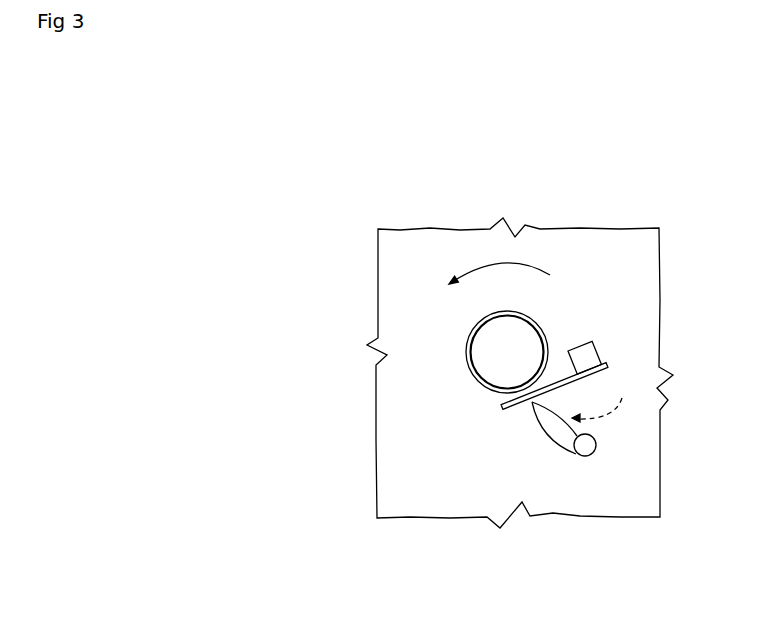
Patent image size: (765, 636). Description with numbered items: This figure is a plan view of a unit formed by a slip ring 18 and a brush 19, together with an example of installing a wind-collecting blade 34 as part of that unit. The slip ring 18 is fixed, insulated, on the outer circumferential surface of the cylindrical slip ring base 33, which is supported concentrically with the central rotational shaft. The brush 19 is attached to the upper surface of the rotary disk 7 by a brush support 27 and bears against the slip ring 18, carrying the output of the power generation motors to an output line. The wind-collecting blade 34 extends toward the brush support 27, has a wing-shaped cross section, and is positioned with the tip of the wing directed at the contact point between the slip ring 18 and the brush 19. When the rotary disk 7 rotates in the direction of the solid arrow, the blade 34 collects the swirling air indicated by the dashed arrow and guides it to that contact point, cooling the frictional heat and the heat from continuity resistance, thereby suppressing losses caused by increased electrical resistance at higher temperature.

The rotary disk 7 is at (377, 368).
The slip ring 18 is at (475, 325).
The slip ring base 33 is at (490, 370).
The brush 19 is at (555, 384).
The brush support 27 is at (596, 350).
The wind-collecting blade 34 is at (554, 430).